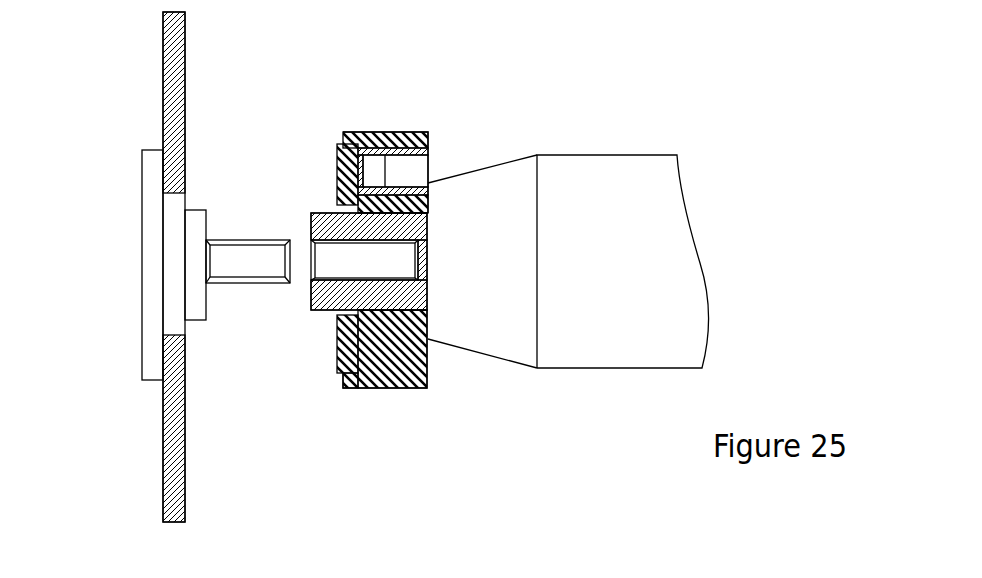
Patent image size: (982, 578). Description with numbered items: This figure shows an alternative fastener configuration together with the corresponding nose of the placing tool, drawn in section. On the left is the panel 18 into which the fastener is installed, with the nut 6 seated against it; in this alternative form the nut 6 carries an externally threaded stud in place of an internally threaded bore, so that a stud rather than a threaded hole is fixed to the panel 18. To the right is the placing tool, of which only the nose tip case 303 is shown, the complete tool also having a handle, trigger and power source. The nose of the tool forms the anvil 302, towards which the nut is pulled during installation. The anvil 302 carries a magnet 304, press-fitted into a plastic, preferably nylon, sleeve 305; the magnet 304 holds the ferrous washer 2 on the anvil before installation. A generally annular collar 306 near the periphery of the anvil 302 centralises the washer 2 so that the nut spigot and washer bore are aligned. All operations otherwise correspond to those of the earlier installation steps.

The washer 2 is at (355, 373).
The nut 6 is at (152, 345).
The panel 18 is at (163, 502).
The anvil 302 is at (428, 133).
The nose tip case 303 is at (620, 318).
The magnet 304 is at (372, 167).
The sleeve 305 is at (428, 152).
The annular collar 306 is at (340, 139).